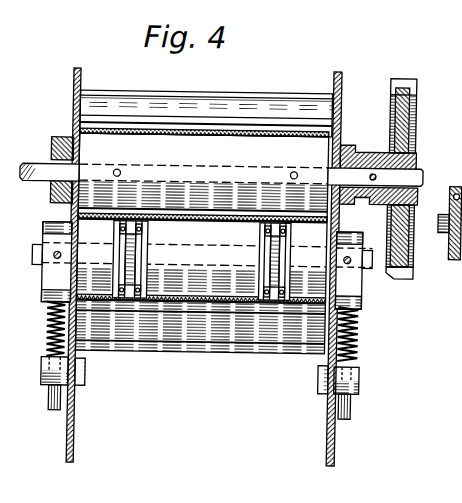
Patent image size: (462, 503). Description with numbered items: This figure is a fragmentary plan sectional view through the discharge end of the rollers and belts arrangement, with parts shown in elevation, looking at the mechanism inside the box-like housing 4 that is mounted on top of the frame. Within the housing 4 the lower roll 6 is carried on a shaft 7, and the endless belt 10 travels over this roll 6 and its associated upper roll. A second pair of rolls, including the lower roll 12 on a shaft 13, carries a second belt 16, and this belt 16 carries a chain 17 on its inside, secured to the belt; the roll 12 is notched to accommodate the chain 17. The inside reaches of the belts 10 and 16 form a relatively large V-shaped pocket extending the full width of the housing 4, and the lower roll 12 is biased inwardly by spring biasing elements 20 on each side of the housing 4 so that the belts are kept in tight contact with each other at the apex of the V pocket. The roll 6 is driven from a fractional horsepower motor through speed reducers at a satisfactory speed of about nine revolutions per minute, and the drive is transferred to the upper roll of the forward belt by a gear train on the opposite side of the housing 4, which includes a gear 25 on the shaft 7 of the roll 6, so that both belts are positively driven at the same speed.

The box-like housing 4 is at (339, 68).
The lower roll 6 is at (184, 149).
The shaft 7 is at (345, 168).
The endless belt 10 is at (154, 127).
The lower roll 12 is at (241, 288).
The shaft 13 is at (372, 264).
The second belt 16 is at (197, 300).
The chain 17 is at (136, 295).
The spring biasing elements 20 is at (52, 343).
The gear 25 is at (414, 92).